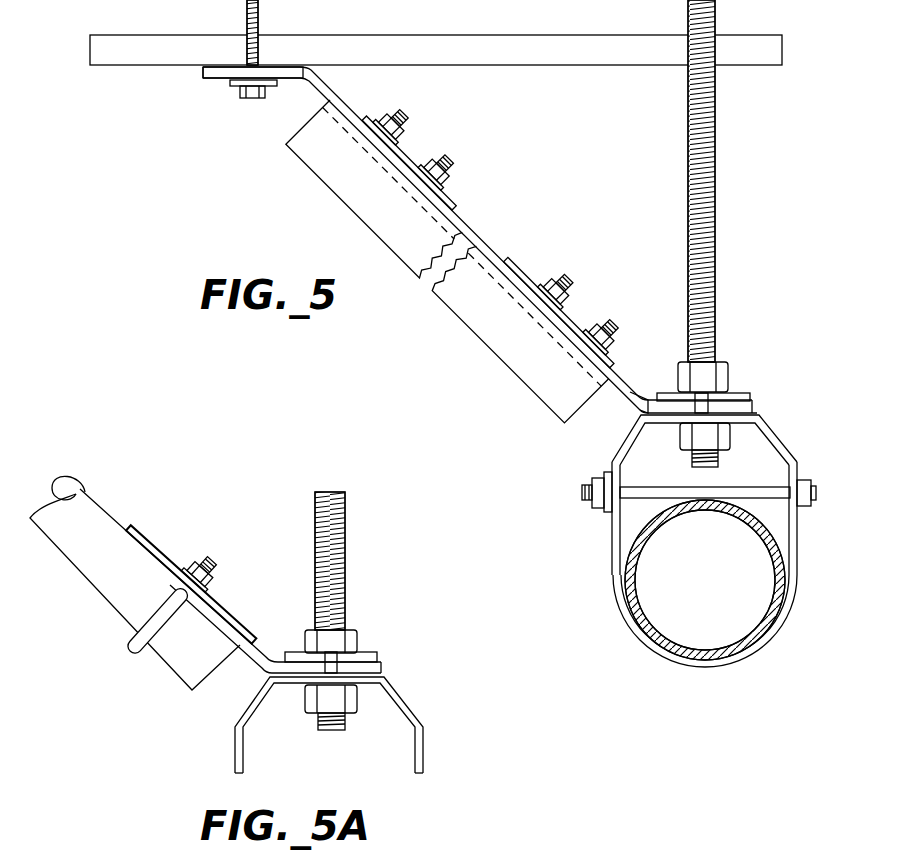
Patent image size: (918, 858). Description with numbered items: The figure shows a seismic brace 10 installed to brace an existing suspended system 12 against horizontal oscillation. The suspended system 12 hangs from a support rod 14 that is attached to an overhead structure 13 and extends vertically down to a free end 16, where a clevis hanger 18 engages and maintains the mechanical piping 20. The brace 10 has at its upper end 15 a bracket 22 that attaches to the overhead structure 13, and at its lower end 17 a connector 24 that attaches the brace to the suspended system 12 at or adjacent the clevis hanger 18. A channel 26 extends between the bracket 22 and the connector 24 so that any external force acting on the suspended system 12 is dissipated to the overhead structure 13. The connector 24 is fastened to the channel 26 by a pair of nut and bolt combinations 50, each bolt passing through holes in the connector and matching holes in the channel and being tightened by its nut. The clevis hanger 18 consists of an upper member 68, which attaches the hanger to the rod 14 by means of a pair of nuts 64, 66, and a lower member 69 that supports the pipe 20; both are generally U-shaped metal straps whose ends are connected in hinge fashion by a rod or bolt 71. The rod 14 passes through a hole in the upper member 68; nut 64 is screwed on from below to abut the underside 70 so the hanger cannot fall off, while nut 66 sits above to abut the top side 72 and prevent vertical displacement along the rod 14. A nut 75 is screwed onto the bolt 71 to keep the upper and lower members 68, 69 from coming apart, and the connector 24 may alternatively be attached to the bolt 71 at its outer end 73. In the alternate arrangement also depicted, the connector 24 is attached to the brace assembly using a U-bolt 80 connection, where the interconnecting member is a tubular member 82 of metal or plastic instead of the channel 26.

In FIG. 5, the seismic brace 10 is at (478, 165).
In FIG. 5, the suspended system 12 is at (742, 402).
In FIG. 5, the overhead structure 13 is at (132, 68).
In FIG. 5, the support rod 14 is at (688, 108).
In FIG. 5A, the support rod 14 is at (340, 570).
In FIG. 5, the upper end 15 is at (252, 110).
In FIG. 5, the free end 16 is at (705, 462).
In FIG. 5, the lower end 17 is at (659, 382).
In FIG. 5, the clevis hanger 18 is at (697, 536).
In FIG. 5, the mechanical piping 20 is at (645, 610).
In FIG. 5, the bracket 22 is at (208, 80).
In FIG. 5, the connector 24 is at (507, 265).
In FIG. 5, the channel 26 is at (472, 330).
In FIG. 5, the nut and bolt combinations 50 is at (556, 284).
In FIG. 5, the nut 64 is at (680, 432).
In FIG. 5, the nut 66 is at (730, 384).
In FIG. 5, the upper member 68 is at (772, 424).
In FIG. 5, the lower member 69 is at (770, 645).
In FIG. 5, the underside 70 is at (780, 444).
In FIG. 5, the rod or bolt 71 is at (806, 502).
In FIG. 5, the top side 72 is at (756, 402).
In FIG. 5, the outer end 73 is at (586, 478).
In FIG. 5, the nut 75 is at (592, 510).
In FIG. 5A, the U-bolt 80 is at (128, 648).
In FIG. 5A, the tubular member 82 is at (88, 505).